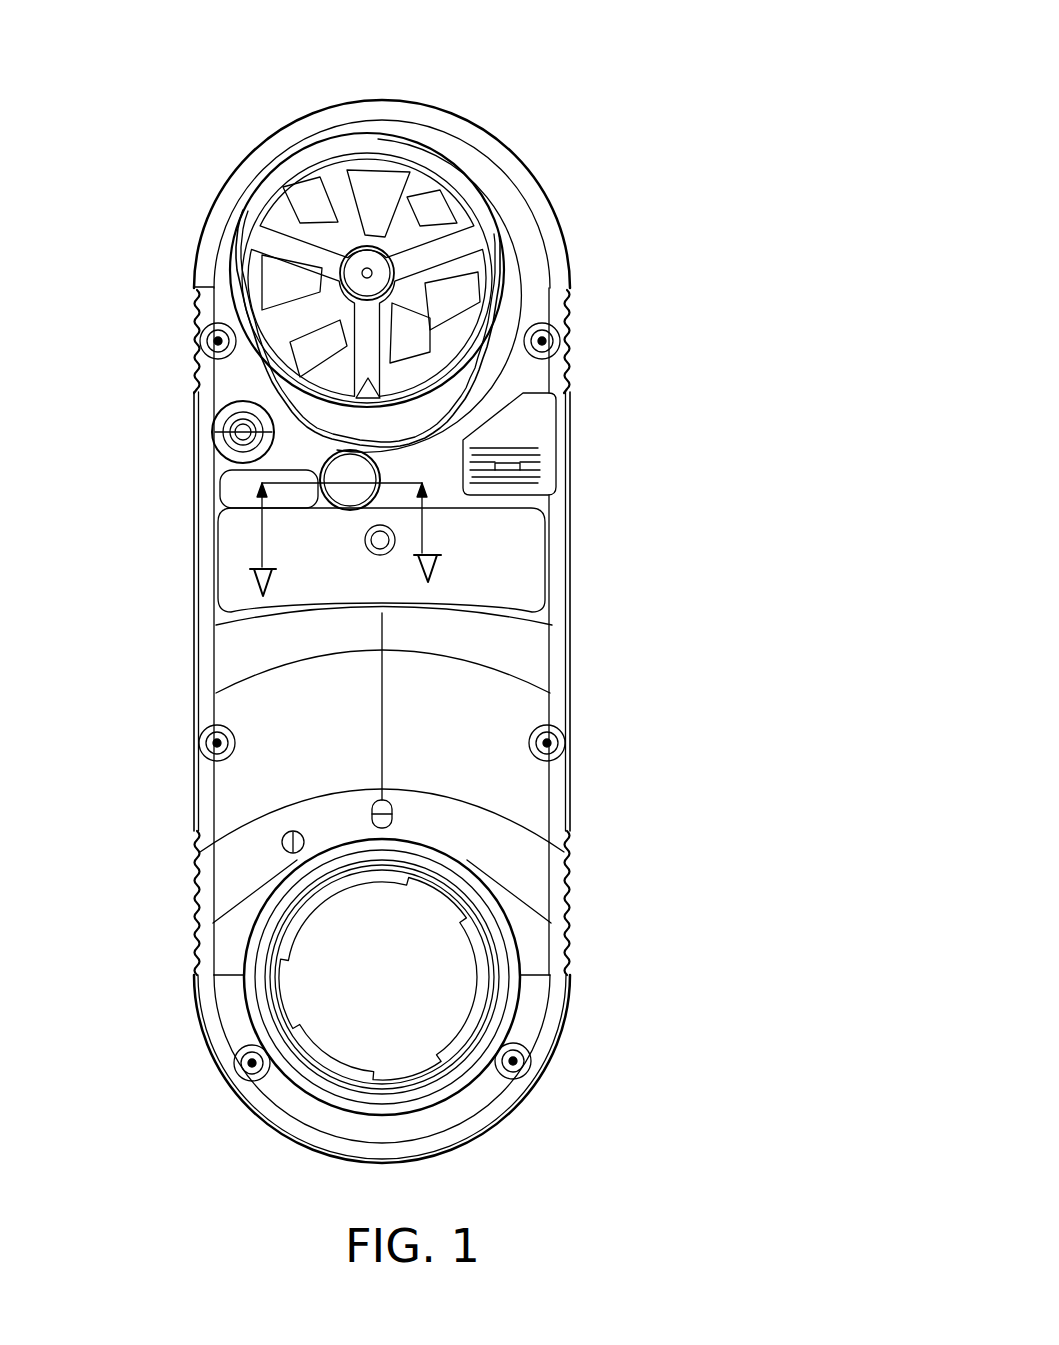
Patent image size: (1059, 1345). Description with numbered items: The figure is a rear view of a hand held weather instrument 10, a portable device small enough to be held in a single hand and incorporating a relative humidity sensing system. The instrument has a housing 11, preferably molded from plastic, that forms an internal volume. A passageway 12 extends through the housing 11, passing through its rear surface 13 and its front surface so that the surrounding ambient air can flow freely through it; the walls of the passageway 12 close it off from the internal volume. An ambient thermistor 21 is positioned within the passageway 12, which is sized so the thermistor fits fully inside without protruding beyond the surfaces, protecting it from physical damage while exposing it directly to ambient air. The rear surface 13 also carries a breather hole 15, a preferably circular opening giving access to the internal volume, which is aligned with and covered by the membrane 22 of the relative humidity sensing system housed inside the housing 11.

The hand held weather instrument 10 is at (613, 198).
The housing 11 is at (175, 642).
The passageway 12 is at (532, 425).
The rear surface 13 is at (530, 637).
The breather hole 15 is at (343, 487).
The ambient thermistor 21 is at (540, 447).
The membrane 22 is at (250, 515).